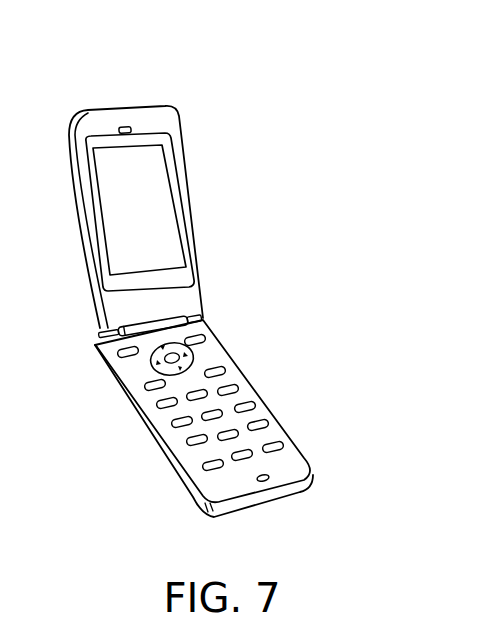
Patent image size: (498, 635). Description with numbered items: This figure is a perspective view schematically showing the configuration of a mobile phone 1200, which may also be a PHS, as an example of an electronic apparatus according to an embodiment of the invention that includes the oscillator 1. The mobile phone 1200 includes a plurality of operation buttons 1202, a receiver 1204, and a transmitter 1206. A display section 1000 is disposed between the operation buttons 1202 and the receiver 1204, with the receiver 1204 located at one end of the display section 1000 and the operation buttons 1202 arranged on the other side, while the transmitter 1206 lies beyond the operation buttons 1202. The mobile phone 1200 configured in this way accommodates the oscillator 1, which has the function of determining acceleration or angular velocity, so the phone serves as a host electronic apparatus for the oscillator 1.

The mobile phone 1200 is at (203, 82).
The display section 1000 is at (162, 199).
The receiver 1204 is at (125, 126).
The oscillator 1 is at (207, 356).
The operation buttons 1202 is at (233, 386).
The transmitter 1206 is at (267, 475).